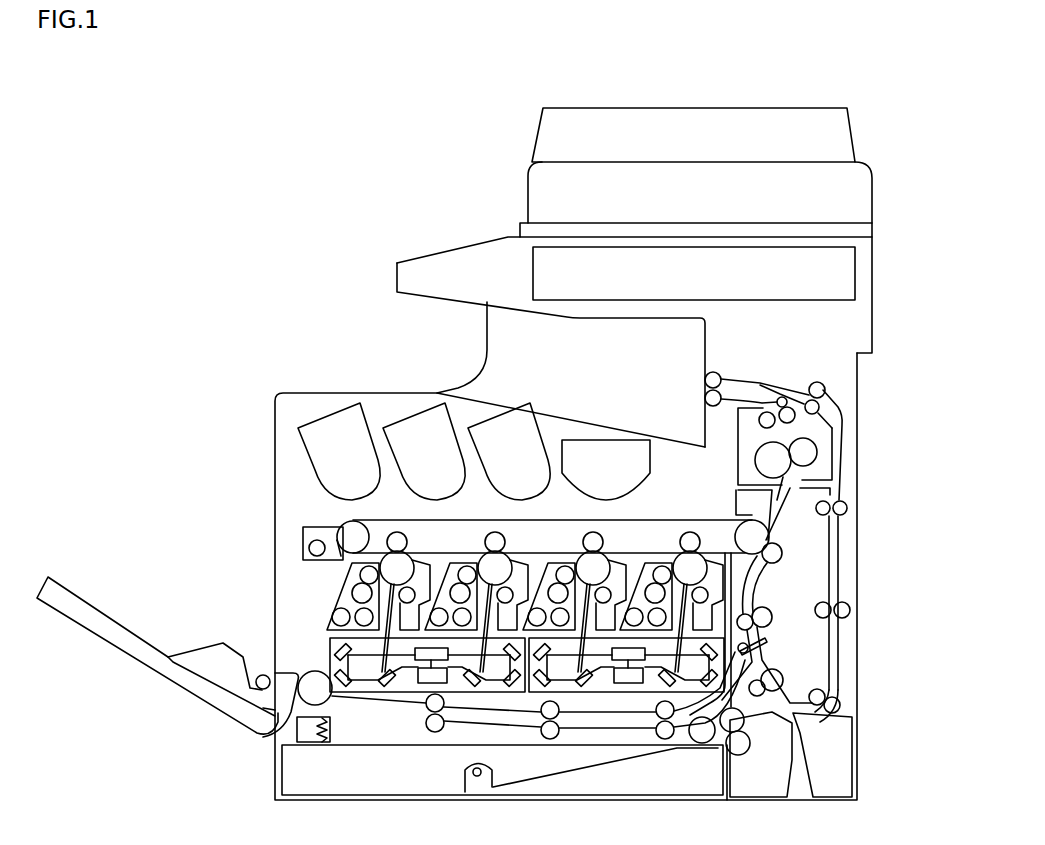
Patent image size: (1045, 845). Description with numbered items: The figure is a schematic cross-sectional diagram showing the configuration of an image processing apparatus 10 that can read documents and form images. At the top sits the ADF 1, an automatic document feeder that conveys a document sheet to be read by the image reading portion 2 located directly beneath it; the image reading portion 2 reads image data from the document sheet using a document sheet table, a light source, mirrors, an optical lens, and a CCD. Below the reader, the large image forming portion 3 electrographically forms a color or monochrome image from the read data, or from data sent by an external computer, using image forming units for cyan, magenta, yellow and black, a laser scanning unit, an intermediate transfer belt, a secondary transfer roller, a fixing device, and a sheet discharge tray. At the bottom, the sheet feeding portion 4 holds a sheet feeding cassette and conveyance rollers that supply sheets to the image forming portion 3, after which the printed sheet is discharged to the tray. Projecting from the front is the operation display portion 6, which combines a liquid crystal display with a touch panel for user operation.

The image processing apparatus 10 is at (272, 158).
The ADF (Automatic Document Feeder) 1 is at (864, 153).
The image reading portion 2 is at (862, 271).
The image forming portion 3 is at (292, 415).
The sheet feeding portion 4 is at (280, 774).
The operation display portion 6 is at (437, 246).